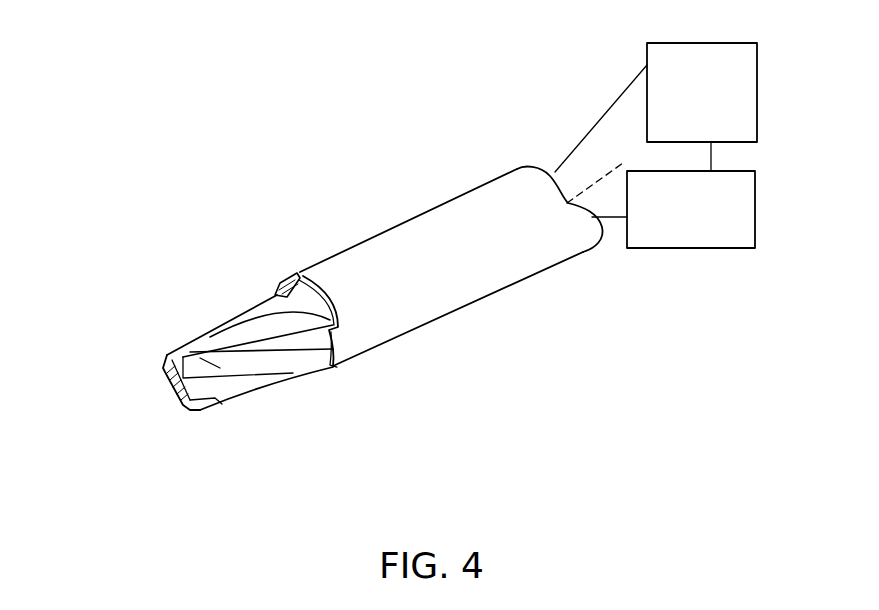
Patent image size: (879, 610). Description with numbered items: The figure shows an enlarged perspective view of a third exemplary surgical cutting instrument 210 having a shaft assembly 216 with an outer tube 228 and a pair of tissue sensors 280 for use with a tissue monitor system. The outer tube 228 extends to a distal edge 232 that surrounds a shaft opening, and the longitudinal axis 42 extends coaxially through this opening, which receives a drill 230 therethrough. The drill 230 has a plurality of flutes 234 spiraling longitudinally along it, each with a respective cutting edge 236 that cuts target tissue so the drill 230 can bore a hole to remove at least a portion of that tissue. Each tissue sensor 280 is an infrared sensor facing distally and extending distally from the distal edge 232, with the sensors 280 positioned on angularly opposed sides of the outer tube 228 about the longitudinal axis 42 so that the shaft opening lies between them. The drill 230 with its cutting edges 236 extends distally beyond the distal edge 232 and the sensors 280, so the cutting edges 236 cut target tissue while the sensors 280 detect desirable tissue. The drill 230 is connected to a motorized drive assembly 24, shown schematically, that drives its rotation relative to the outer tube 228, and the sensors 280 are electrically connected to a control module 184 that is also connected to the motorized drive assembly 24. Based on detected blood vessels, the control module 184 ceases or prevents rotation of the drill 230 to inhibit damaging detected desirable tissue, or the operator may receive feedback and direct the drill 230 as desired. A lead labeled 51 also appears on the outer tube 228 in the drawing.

The surgical cutting instrument 210 is at (229, 101).
The shaft assembly 216 is at (267, 171).
The outer tube 228 is at (445, 200).
The shaft 51 is at (383, 247).
The distal edge 232 is at (289, 279).
The tissue sensor 280 is at (277, 294).
The drill 230 is at (189, 325).
The flute 234 is at (250, 333).
The cutting edge 236 is at (218, 326).
The longitudinal axis 42 is at (588, 183).
The motorized drive assembly 24 is at (758, 75).
The control module 184 is at (756, 207).